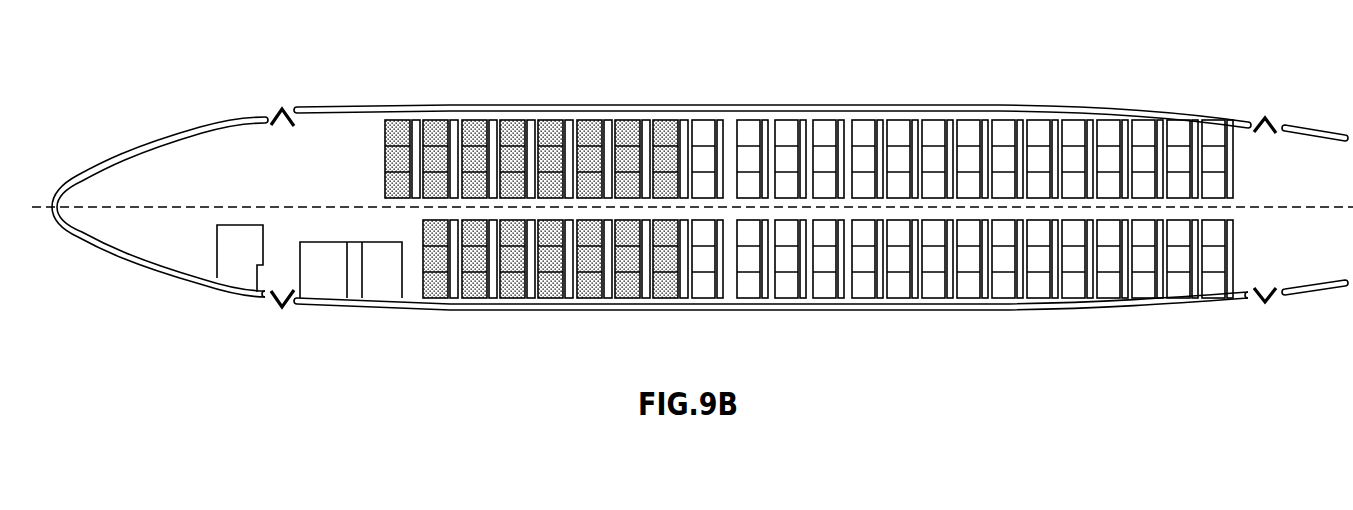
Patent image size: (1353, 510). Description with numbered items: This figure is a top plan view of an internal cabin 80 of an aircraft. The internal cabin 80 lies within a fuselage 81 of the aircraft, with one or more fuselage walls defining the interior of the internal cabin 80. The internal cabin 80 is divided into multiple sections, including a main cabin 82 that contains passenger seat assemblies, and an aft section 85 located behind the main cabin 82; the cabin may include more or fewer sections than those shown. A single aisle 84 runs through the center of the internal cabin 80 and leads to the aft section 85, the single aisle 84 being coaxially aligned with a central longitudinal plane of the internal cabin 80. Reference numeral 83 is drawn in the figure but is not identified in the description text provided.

The internal cabin 80 is at (297, 48).
The fuselage 81 is at (500, 108).
The main cabin 82 is at (437, 125).
The economy seats 83 is at (706, 138).
The single aisle 84 is at (828, 205).
The aft section 85 is at (1250, 143).